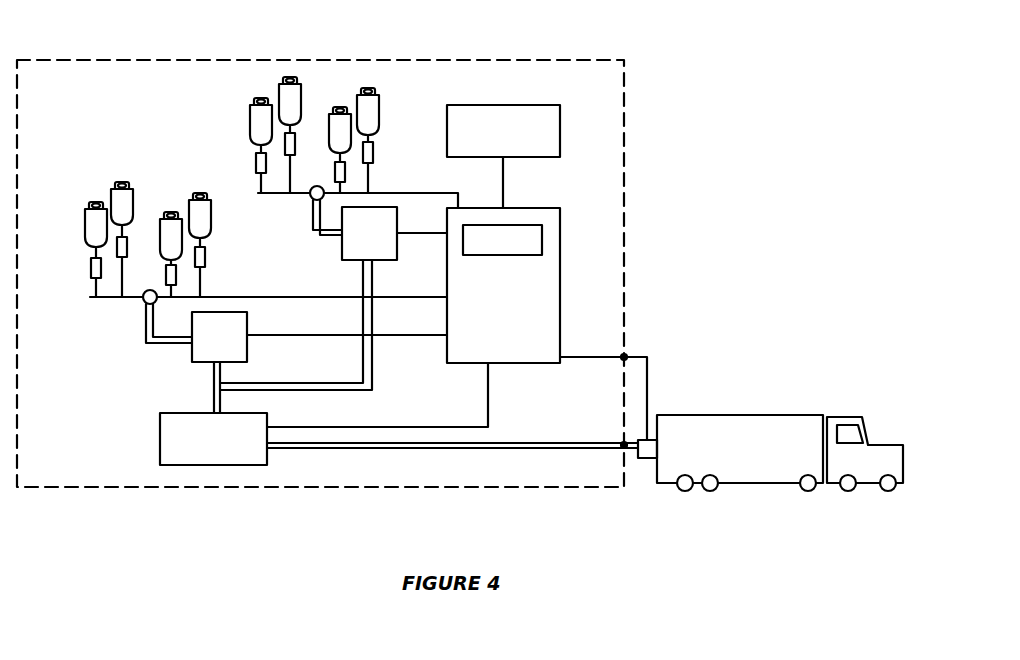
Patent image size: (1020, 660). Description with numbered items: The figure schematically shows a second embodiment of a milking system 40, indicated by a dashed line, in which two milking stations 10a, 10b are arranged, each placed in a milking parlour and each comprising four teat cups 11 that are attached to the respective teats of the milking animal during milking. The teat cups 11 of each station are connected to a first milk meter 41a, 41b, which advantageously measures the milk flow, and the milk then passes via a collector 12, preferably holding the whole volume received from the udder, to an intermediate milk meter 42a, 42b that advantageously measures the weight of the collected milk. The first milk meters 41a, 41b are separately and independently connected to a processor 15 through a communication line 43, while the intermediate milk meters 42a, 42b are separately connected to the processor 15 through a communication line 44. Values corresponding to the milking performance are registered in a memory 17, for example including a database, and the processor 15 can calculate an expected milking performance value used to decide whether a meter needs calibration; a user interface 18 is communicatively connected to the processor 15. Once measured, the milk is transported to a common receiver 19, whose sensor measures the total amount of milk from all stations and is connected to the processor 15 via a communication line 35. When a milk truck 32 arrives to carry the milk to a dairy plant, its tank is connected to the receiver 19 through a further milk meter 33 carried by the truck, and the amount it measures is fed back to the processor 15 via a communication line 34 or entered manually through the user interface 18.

The milking system 40 is at (216, 60).
The milking station 10a is at (242, 214).
The milking station 10b is at (292, 156).
The teat cup 11 is at (84, 226).
The collector 12 is at (143, 305).
The first milk meter 41a is at (90, 297).
The first milk meter 41b is at (259, 193).
The intermediate milk meter 42a is at (196, 340).
The intermediate milk meter 42b is at (365, 238).
The communication line 43 is at (440, 196).
The communication line 44 is at (425, 236).
The processor 15 is at (548, 326).
The memory 17 is at (520, 244).
The user interface 18 is at (548, 125).
The common receiver 19 is at (170, 438).
The communication line 35 is at (392, 427).
The communication line 34 is at (628, 357).
The milk meter 33 is at (645, 460).
The milk truck 32 is at (750, 432).